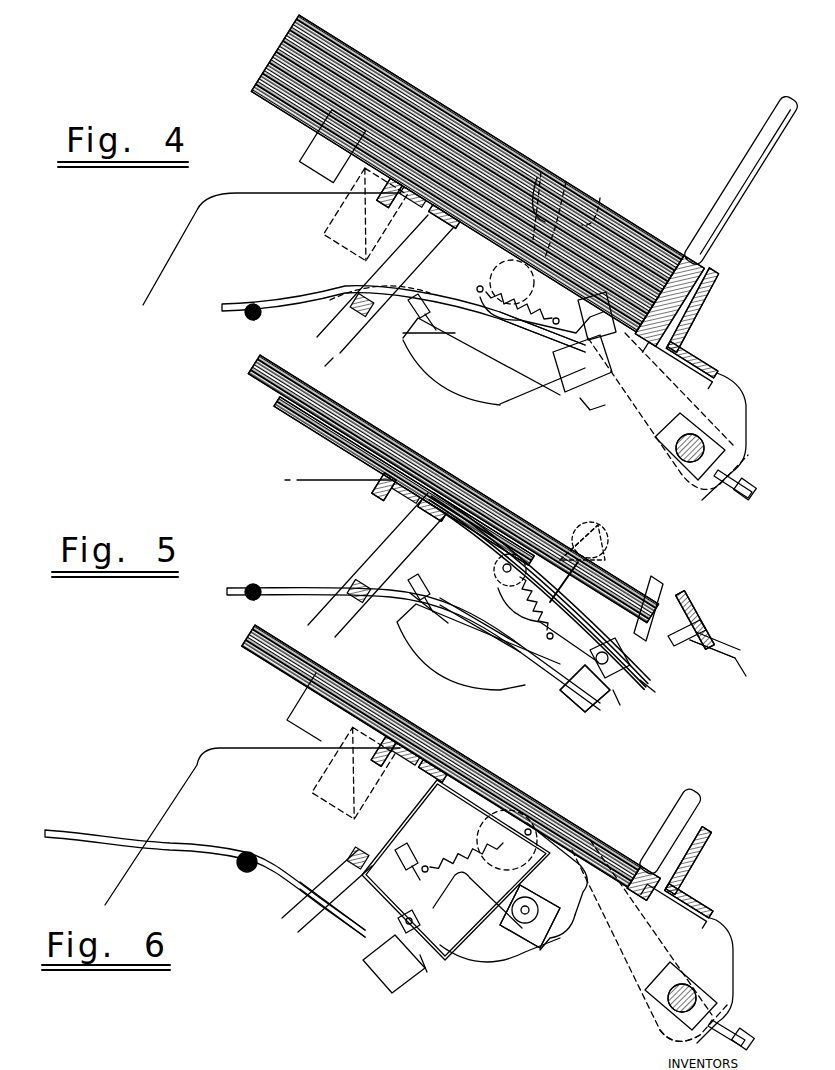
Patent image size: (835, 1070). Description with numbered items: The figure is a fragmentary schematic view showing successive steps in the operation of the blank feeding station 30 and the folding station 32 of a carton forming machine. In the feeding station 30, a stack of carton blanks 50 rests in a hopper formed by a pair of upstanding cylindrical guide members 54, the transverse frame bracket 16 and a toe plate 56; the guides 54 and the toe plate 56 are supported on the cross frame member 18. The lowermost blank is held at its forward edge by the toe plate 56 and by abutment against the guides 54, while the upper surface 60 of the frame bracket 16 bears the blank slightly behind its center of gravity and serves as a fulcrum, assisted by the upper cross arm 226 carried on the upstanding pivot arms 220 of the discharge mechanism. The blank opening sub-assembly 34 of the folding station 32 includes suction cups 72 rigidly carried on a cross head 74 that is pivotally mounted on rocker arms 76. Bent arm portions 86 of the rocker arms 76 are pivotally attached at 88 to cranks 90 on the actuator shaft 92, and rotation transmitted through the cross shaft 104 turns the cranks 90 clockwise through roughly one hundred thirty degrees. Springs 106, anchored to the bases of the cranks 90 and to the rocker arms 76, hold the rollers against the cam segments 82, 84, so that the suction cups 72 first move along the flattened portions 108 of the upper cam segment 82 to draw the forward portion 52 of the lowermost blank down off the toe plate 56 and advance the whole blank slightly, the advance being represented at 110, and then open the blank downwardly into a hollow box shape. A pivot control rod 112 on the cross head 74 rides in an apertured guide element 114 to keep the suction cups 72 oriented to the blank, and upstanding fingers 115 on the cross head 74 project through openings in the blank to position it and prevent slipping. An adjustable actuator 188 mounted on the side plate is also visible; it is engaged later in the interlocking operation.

In FIG. 4, the transverse frame bracket 16 is at (395, 205).
In FIG. 5, the transverse frame bracket 16 is at (395, 500).
In FIG. 6, the transverse frame bracket 16 is at (398, 762).
In FIG. 4, the cross frame member 18 is at (700, 316).
In FIG. 5, the cross frame member 18 is at (694, 636).
In FIG. 6, the cross frame member 18 is at (686, 890).
In FIG. 4, the blank feeding station 30 is at (671, 180).
In FIG. 5, the blank feeding station 30 is at (580, 528).
In FIG. 5, the folding station 32 is at (710, 681).
In FIG. 6, the folding station 32 is at (607, 1023).
In FIG. 4, the blank opening sub-assembly 34 is at (668, 411).
In FIG. 5, the blank opening sub-assembly 34 is at (562, 704).
In FIG. 6, the blank opening sub-assembly 34 is at (358, 988).
In FIG. 4, the stack of carton blanks 50 is at (405, 105).
In FIG. 4, the forward portion of the lowermost blank 52 is at (660, 340).
In FIG. 5, the forward portion of the lowermost blank 52 is at (662, 690).
In FIG. 4, the upstanding cylindrical guide members 54 is at (733, 208).
In FIG. 5, the upstanding cylindrical guide members 54 is at (655, 580).
In FIG. 6, the upstanding cylindrical guide members 54 is at (672, 808).
In FIG. 4, the toe plate 56 is at (682, 366).
In FIG. 5, the toe plate 56 is at (674, 650).
In FIG. 6, the toe plate 56 is at (664, 930).
In FIG. 4, the upper surface 60 is at (468, 165).
In FIG. 5, the upper surface 60 is at (420, 486).
In FIG. 6, the upper surface 60 is at (438, 760).
In FIG. 5, the suction cups 72 is at (610, 654).
In FIG. 6, the suction cups 72 is at (400, 922).
In FIG. 4, the cross head 74 is at (588, 400).
In FIG. 5, the cross head 74 is at (604, 692).
In FIG. 6, the cross head 74 is at (410, 975).
In FIG. 4, the rocker arms 76 is at (585, 321).
In FIG. 5, the rocker arms 76 is at (581, 649).
In FIG. 6, the rocker arms 76 is at (440, 906).
In FIG. 4, the upper cam segment 82 is at (526, 370).
In FIG. 6, the upper cam segment 82 is at (566, 934).
In FIG. 4, the cam segment 84 is at (508, 398).
In FIG. 5, the cam segment 84 is at (484, 676).
In FIG. 6, the cam segment 84 is at (496, 962).
In FIG. 4, the bent arm portions 86 is at (541, 170).
In FIG. 5, the bent arm portions 86 is at (590, 568).
In FIG. 6, the bent arm portions 86 is at (492, 898).
In FIG. 4, the pivotal attachment 88 is at (566, 180).
In FIG. 5, the pivotal attachment 88 is at (604, 532).
In FIG. 6, the pivotal attachment 88 is at (545, 948).
In FIG. 4, the cranks 90 is at (598, 197).
In FIG. 6, the cranks 90 is at (535, 896).
In FIG. 4, the actuator shaft 92 is at (492, 262).
In FIG. 5, the actuator shaft 92 is at (495, 566).
In FIG. 4, the cross shaft 104 is at (700, 448).
In FIG. 6, the cross shaft 104 is at (690, 1000).
In FIG. 5, the springs 106 is at (528, 600).
In FIG. 6, the springs 106 is at (455, 852).
In FIG. 6, the flattened portions 108 is at (584, 905).
In FIG. 4, the blank advance 110 is at (308, 184).
In FIG. 4, the pivot control rod 112 is at (508, 324).
In FIG. 5, the pivot control rod 112 is at (472, 612).
In FIG. 6, the pivot control rod 112 is at (372, 926).
In FIG. 4, the apertured guide element 114 is at (257, 302).
In FIG. 5, the apertured guide element 114 is at (258, 582).
In FIG. 6, the apertured guide element 114 is at (252, 850).
In FIG. 5, the upstanding fingers 115 is at (622, 700).
In FIG. 6, the upstanding fingers 115 is at (428, 974).
In FIG. 4, the adjustable actuator 188 is at (432, 336).
In FIG. 5, the adjustable actuator 188 is at (430, 618).
In FIG. 6, the adjustable actuator 188 is at (394, 856).
In FIG. 4, the upstanding pivot arms 220 is at (350, 332).
In FIG. 5, the upstanding pivot arms 220 is at (378, 548).
In FIG. 6, the upstanding pivot arms 220 is at (322, 874).
In FIG. 4, the cross arms 226 is at (447, 224).
In FIG. 5, the cross arms 226 is at (448, 512).
In FIG. 6, the cross arms 226 is at (430, 786).